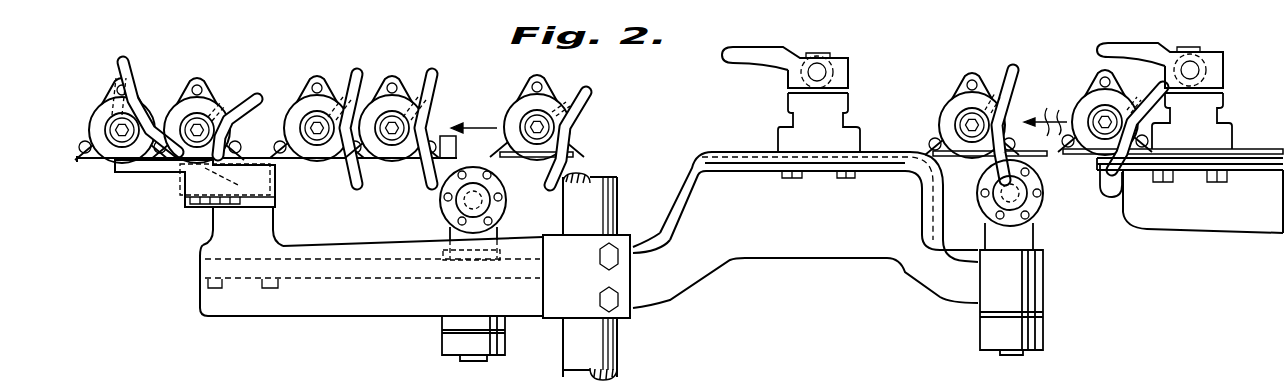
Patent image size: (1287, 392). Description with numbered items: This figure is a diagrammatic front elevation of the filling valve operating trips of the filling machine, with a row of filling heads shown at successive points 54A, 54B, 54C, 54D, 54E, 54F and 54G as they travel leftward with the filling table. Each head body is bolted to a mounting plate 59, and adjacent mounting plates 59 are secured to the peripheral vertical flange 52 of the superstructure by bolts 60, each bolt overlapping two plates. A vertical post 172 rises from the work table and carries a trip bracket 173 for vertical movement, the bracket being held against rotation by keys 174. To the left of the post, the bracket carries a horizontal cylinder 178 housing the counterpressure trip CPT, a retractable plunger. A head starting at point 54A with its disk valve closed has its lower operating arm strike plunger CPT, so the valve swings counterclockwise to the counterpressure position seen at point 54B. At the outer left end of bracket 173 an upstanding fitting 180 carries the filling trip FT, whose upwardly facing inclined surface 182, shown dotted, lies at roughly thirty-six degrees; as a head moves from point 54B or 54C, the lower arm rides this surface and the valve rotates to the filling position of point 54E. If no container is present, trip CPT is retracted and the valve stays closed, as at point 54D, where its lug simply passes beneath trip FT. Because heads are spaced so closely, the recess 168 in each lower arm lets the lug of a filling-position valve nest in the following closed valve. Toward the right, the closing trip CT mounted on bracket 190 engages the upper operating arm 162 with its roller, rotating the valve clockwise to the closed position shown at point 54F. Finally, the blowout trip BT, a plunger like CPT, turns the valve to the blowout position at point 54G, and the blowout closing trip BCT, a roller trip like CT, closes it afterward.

The filling head position (neutral or closed stage) 54A is at (573, 120).
The filling head position (counterpressure stage) 54B is at (403, 90).
The filling head position (counterpressure stage) 54C is at (318, 108).
The filling head position (closed, no container) 54D is at (193, 88).
The filling head position (filling stage) 54E is at (123, 96).
The filling head position (closed after trip CT) 54F is at (1088, 91).
The filling head position (blowout stage) 54G is at (955, 90).
The upper operating arm 162 is at (140, 53).
The mounting plate 59 is at (308, 98).
The bolts 60 is at (279, 157).
The flange 52 is at (467, 116).
The filling trip FT is at (232, 100).
The inclined surface 182 is at (248, 162).
The recess 168 is at (173, 175).
The upstanding fitting 180 is at (227, 232).
The trip bracket 173 is at (670, 300).
The keys 174 is at (607, 343).
The vertical post 172 is at (572, 345).
The cylinder 178 is at (443, 264).
The counterpressure trip CPT is at (465, 203).
The blowout closing trip BCT is at (820, 53).
The closing trip CT is at (1215, 63).
The blowout trip BT is at (1033, 210).
The bracket 190 is at (1210, 213).